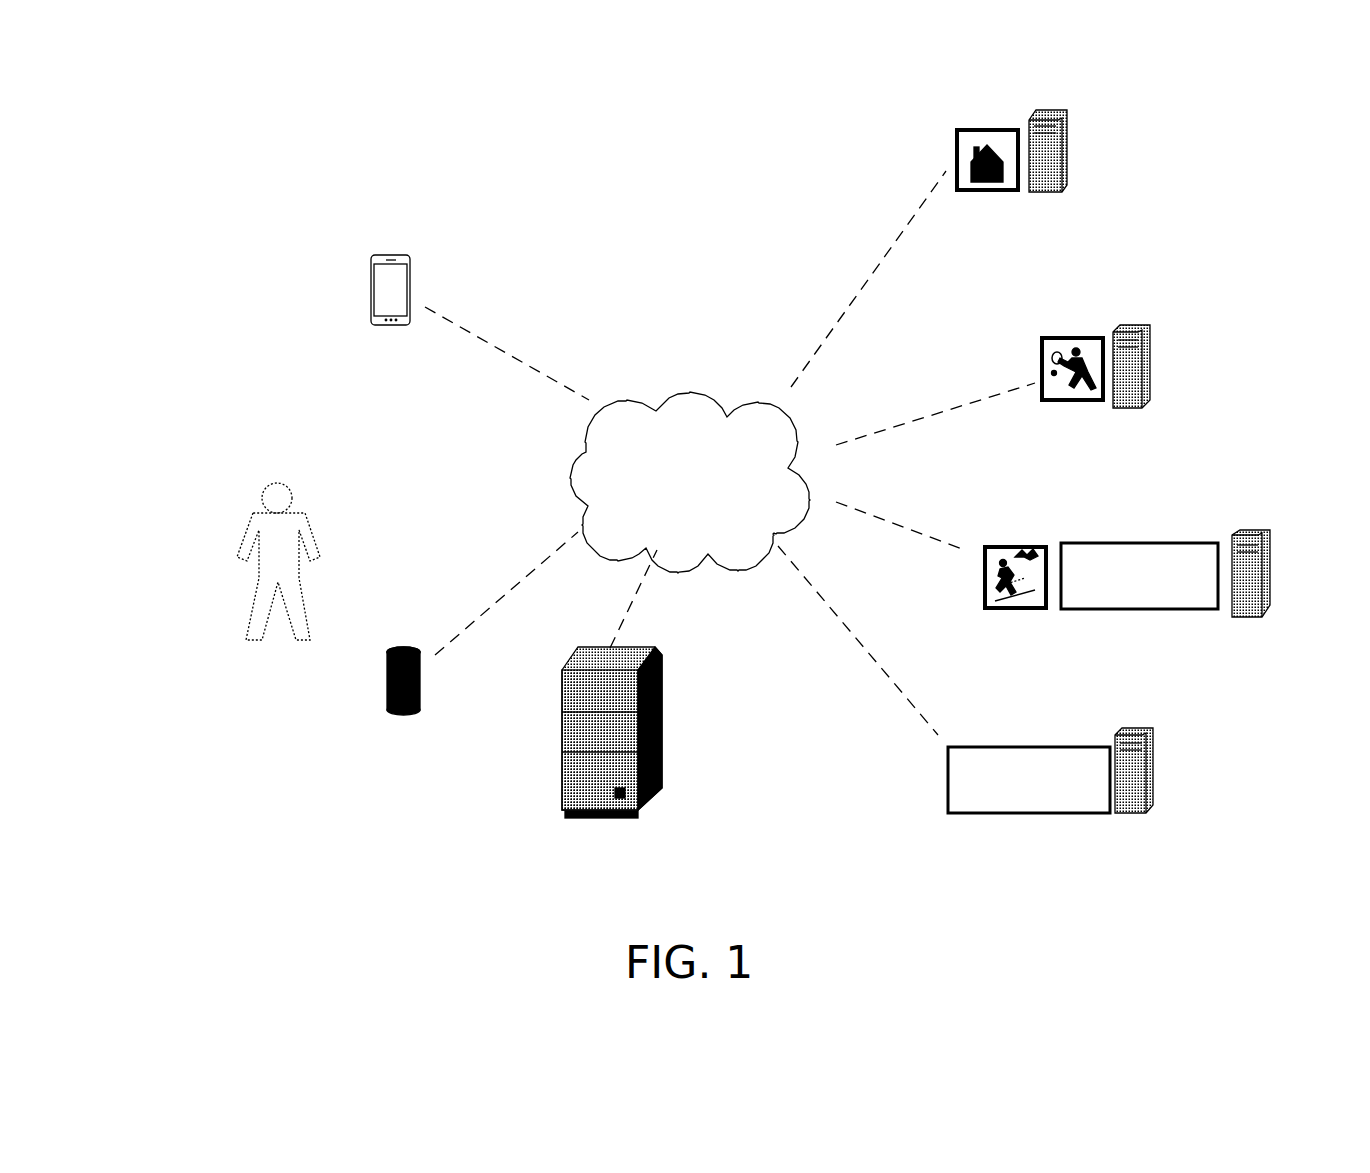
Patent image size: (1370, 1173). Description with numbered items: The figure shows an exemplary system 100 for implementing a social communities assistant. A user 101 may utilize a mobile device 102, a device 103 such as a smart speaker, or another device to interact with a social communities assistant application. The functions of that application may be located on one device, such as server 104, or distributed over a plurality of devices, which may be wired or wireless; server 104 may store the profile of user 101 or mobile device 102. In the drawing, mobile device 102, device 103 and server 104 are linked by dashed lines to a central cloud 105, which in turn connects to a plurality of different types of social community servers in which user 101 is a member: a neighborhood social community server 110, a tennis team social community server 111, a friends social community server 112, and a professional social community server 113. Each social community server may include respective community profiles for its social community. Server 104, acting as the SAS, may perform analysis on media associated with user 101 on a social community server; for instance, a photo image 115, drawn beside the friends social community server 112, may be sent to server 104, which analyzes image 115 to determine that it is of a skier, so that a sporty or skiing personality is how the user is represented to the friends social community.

The system 100 is at (186, 122).
The user 101 is at (247, 641).
The mobile device 102 is at (392, 326).
The device 103 is at (395, 712).
The server 104 is at (643, 743).
The network 105 is at (708, 492).
The neighborhood social community server 110 is at (1047, 112).
The tennis team social community server 111 is at (1133, 326).
The friends social community server 112 is at (1265, 531).
The professional social community server 113 is at (1138, 729).
The photo image 115 is at (1027, 610).